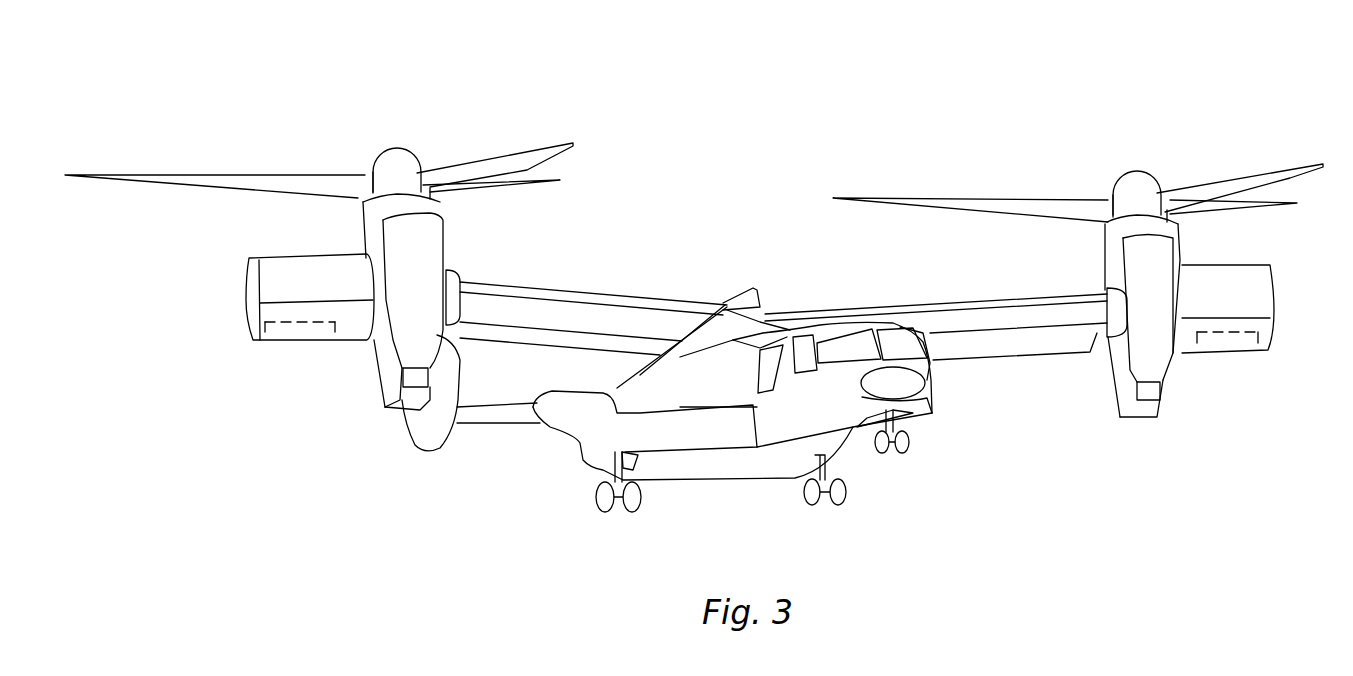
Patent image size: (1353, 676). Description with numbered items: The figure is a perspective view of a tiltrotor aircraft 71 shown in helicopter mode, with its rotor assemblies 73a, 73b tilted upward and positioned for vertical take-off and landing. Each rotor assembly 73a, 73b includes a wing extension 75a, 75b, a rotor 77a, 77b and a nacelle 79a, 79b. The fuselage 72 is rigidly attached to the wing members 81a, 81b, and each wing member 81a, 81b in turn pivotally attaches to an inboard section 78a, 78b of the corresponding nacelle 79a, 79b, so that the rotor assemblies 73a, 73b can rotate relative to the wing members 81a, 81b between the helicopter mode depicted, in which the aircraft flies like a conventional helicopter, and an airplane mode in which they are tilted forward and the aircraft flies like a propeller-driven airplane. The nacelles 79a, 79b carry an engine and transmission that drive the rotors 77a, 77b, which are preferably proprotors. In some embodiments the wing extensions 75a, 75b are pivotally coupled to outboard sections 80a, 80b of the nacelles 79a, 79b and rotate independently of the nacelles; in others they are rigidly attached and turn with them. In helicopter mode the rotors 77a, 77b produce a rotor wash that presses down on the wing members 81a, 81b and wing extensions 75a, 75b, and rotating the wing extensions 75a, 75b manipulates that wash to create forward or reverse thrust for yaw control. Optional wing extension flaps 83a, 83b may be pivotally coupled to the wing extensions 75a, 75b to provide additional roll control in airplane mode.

The tiltrotor aircraft 71 is at (498, 537).
The fuselage 72 is at (585, 455).
The rotor assembly 73a is at (366, 365).
The rotor assembly 73b is at (1176, 400).
The wing extension 75a is at (288, 257).
The wing extension 75b is at (1272, 282).
The rotor 77a is at (267, 173).
The rotor 77b is at (1220, 183).
The inboard section 78a is at (432, 208).
The inboard section 78b is at (1100, 258).
The nacelle 79a is at (390, 410).
The nacelle 79b is at (1137, 423).
The outboard section 80a is at (360, 238).
The outboard section 80b is at (1173, 230).
The wing member 81a is at (590, 292).
The wing member 81b is at (943, 307).
The wing extension flap 83a is at (307, 342).
The wing extension flap 83b is at (1232, 352).